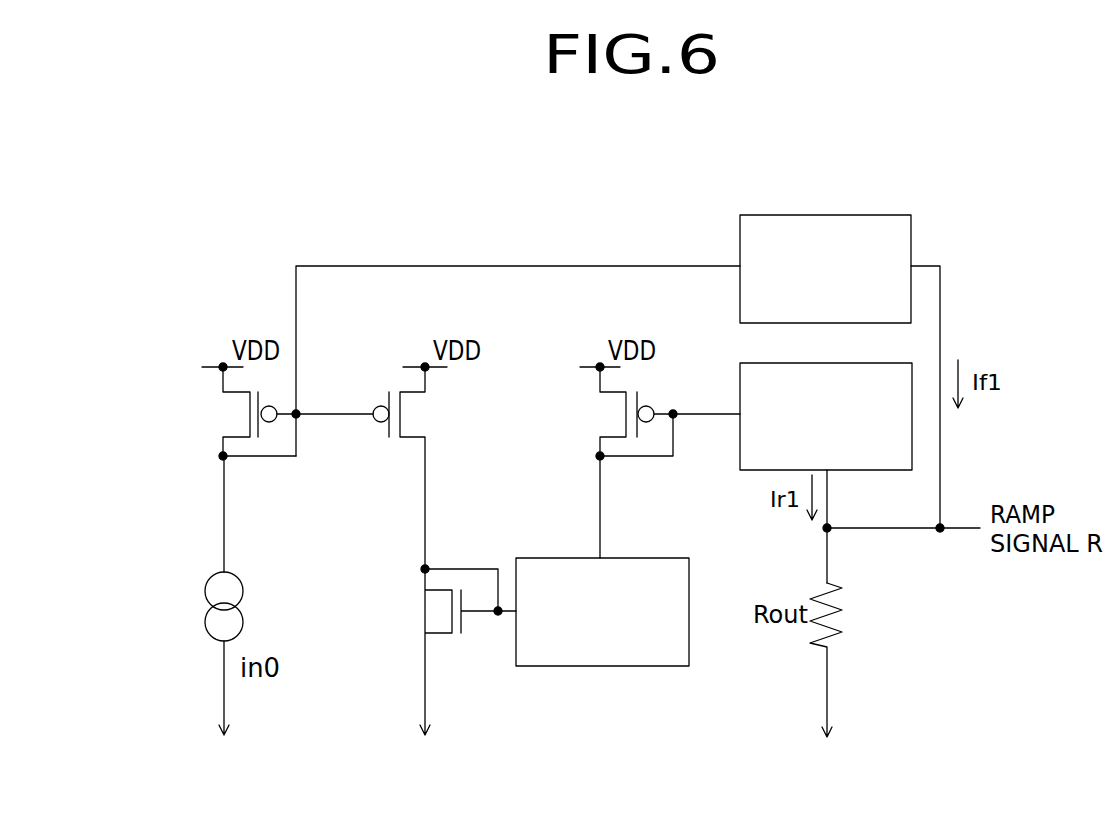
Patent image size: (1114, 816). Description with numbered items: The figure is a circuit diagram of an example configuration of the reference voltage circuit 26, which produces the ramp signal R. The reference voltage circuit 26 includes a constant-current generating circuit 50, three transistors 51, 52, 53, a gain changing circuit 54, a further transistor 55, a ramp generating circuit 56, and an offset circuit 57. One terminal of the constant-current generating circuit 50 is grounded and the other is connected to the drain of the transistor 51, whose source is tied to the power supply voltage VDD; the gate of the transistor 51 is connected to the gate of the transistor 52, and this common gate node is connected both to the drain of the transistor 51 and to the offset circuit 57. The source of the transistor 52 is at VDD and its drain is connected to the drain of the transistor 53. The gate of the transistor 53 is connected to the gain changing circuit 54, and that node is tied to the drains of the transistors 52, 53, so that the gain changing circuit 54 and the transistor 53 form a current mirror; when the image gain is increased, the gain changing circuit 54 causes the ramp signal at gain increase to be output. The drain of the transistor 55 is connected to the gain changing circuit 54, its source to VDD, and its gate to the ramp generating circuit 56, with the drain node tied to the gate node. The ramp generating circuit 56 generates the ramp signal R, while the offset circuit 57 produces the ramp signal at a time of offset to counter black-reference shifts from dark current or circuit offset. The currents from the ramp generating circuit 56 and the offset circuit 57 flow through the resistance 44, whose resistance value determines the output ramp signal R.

The reference voltage circuit 26 is at (904, 776).
The resistance 44 is at (845, 607).
The constant-current generating circuit 50 is at (206, 625).
The transistor 51 is at (248, 413).
The transistor 52 is at (403, 413).
The transistor 53 is at (448, 610).
The gain changing circuit 54 is at (600, 668).
The transistor 55 is at (624, 413).
The ramp generating circuit 56 is at (740, 385).
The offset circuit 57 is at (825, 215).